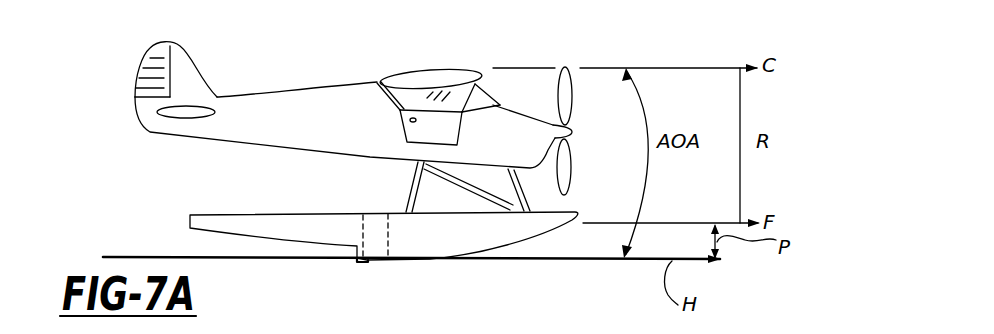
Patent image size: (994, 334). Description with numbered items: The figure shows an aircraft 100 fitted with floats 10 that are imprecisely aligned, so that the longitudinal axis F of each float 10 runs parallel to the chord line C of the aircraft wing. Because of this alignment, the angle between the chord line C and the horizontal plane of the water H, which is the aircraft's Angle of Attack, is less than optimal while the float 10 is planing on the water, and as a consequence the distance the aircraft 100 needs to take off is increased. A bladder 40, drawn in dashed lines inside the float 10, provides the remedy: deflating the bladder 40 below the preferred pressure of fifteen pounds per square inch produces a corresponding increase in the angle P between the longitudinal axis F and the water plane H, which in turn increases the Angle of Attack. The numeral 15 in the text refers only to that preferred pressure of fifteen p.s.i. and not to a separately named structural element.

The aircraft 100 is at (350, 72).
The float 10 is at (188, 200).
The bladder 40 is at (363, 218).
The keel step 15 is at (348, 270).